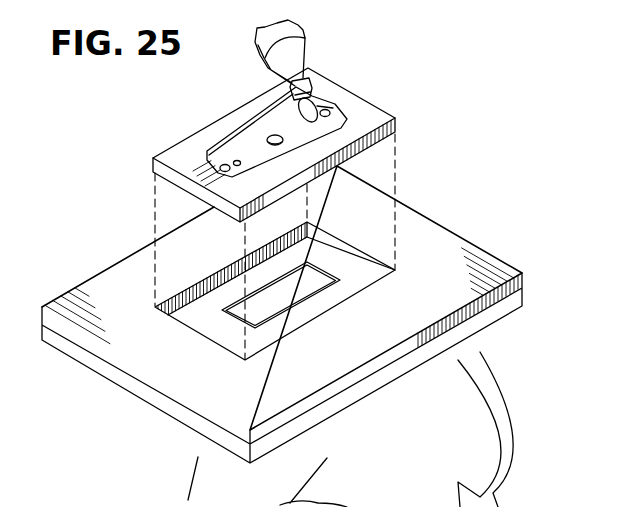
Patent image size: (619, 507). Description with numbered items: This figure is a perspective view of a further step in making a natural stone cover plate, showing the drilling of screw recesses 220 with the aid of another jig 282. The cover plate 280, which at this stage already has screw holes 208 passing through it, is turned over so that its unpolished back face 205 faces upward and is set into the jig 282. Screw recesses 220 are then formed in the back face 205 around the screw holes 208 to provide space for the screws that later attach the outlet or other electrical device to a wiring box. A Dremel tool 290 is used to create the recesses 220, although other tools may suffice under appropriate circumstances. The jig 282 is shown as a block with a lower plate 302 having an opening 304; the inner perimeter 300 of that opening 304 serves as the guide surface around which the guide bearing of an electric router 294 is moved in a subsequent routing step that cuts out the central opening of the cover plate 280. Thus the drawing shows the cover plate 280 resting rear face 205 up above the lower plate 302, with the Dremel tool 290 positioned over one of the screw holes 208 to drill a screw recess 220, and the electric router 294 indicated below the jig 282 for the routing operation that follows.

The back face 205 is at (378, 118).
The screw holes 208 is at (224, 164).
The screw recesses 220 is at (237, 160).
The cover plate 280 is at (313, 138).
The jig 282 is at (477, 235).
The Dremel tool 290 is at (305, 40).
The electric router 294 is at (347, 506).
The inner perimeter 300 is at (326, 271).
The lower plate 302 is at (302, 317).
The opening 304 is at (268, 300).